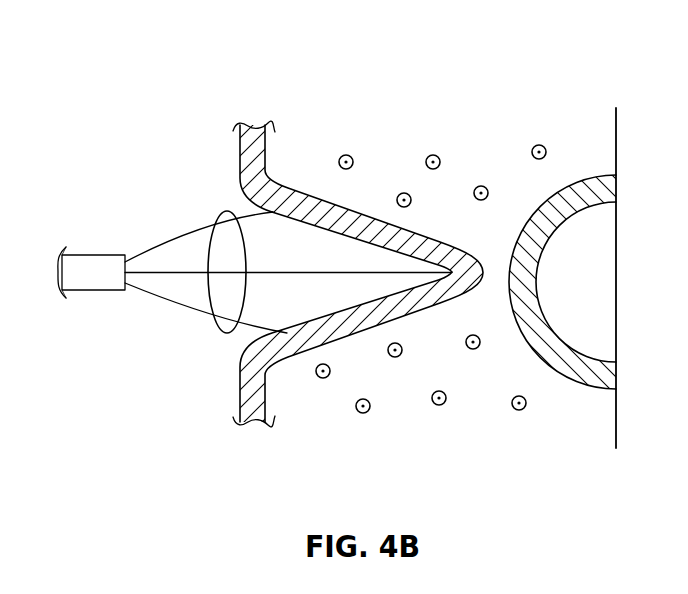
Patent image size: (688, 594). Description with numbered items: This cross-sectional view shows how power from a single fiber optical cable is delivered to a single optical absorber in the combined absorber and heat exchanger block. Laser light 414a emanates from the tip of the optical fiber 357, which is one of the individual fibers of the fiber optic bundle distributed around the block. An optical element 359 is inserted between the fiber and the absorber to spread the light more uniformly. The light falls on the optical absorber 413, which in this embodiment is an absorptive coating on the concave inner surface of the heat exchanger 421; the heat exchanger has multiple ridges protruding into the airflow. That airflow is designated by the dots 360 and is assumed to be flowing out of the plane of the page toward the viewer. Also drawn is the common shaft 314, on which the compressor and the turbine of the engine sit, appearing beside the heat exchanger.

The optical fiber 357 is at (100, 263).
The laser light 414a is at (172, 272).
The optical element 359 is at (223, 297).
The heat exchanger 421 is at (252, 153).
The optical absorber 413 is at (309, 222).
The dots 360 is at (481, 183).
The common shaft 314 is at (588, 185).